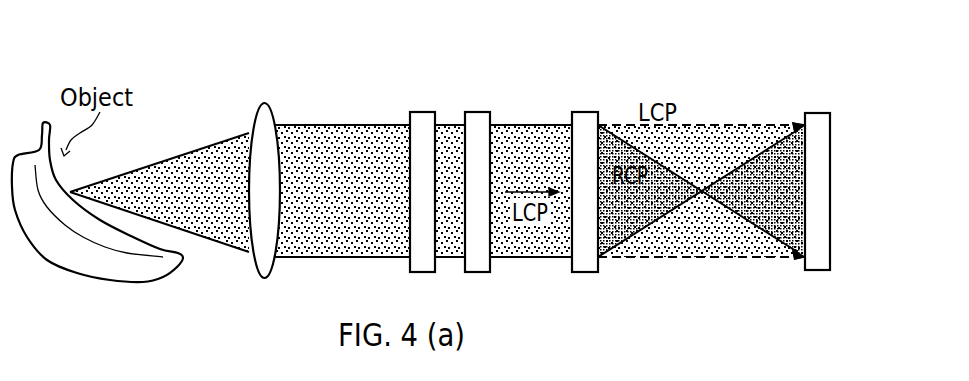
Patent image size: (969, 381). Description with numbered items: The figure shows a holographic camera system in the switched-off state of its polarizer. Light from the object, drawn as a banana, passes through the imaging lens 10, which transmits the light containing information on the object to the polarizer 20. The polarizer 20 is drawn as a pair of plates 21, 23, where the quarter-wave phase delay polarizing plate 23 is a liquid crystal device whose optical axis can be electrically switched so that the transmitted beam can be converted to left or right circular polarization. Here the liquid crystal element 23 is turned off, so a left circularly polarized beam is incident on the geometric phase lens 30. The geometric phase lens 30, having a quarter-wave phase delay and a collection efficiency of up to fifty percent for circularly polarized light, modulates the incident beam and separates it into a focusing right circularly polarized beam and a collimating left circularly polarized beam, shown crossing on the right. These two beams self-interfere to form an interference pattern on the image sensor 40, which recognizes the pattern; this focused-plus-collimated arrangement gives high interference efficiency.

The imaging lens 10 is at (265, 104).
The polarizer 20 is at (451, 136).
The first polarizing plate 21 is at (422, 111).
The polarizing plate 23 is at (483, 154).
The geometric phase lens 30 is at (585, 111).
The image sensor 40 is at (815, 112).